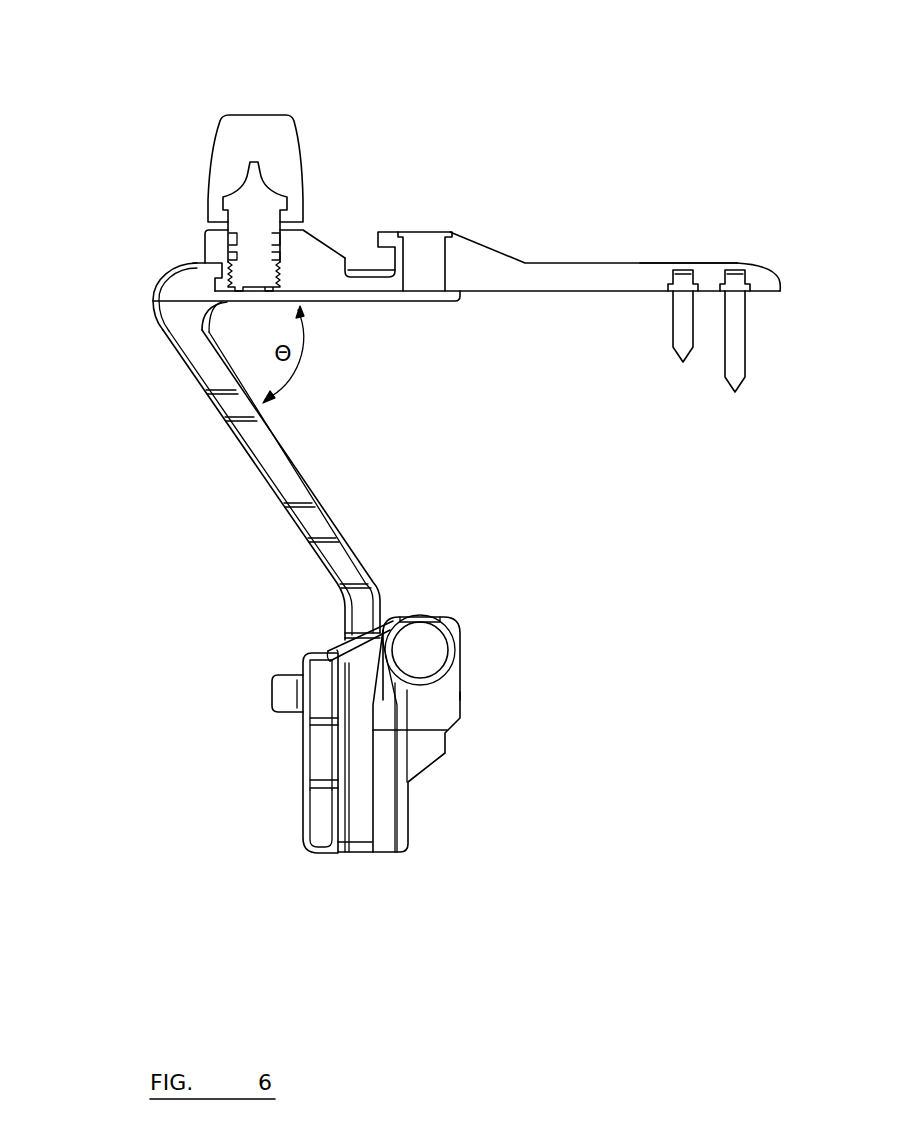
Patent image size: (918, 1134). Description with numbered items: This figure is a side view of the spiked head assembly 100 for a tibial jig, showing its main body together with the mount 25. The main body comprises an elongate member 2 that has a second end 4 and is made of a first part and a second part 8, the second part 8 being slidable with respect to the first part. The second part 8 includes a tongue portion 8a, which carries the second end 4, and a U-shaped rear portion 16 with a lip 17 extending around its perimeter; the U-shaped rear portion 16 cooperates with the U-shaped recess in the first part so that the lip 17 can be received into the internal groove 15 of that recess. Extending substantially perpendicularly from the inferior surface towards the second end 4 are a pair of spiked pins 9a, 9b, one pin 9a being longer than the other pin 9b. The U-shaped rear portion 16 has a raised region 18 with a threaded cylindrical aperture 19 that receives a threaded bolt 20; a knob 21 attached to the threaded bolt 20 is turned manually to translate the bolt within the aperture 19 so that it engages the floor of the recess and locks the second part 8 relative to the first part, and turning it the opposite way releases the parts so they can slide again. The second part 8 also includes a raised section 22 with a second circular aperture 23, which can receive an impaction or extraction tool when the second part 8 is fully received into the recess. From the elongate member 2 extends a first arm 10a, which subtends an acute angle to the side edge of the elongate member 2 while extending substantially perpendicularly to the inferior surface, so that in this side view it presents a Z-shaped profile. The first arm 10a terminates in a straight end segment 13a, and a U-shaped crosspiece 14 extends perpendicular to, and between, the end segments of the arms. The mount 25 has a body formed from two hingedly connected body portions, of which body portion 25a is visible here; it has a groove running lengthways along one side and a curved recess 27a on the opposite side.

The spiked head assembly 100 is at (580, 136).
The elongate member 2 is at (266, 512).
The second end 4 is at (782, 281).
The second part 8 is at (597, 263).
The tongue portion 8a is at (687, 263).
The spiked pin 9a is at (736, 395).
The spiked pin 9b is at (678, 352).
The first arm 10a is at (265, 453).
The straight end segment 13a is at (347, 622).
The U-shaped crosspiece 14 is at (288, 693).
The internal groove 15 is at (197, 307).
The U-shaped rear portion 16 is at (358, 291).
The lip 17 is at (222, 278).
The raised region 18 is at (313, 248).
The threaded cylindrical aperture 19 is at (235, 255).
The threaded bolt 20 is at (248, 195).
The knob 21 is at (255, 113).
The raised section 22 is at (461, 231).
The second circular aperture 23 is at (425, 247).
The mount 25 is at (460, 718).
The body portion 25a is at (462, 658).
The curved recess 27a is at (365, 828).